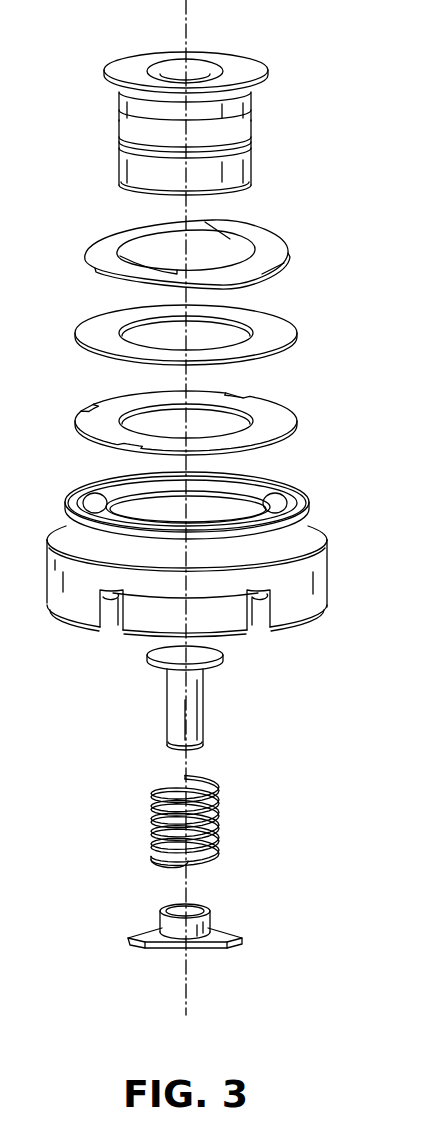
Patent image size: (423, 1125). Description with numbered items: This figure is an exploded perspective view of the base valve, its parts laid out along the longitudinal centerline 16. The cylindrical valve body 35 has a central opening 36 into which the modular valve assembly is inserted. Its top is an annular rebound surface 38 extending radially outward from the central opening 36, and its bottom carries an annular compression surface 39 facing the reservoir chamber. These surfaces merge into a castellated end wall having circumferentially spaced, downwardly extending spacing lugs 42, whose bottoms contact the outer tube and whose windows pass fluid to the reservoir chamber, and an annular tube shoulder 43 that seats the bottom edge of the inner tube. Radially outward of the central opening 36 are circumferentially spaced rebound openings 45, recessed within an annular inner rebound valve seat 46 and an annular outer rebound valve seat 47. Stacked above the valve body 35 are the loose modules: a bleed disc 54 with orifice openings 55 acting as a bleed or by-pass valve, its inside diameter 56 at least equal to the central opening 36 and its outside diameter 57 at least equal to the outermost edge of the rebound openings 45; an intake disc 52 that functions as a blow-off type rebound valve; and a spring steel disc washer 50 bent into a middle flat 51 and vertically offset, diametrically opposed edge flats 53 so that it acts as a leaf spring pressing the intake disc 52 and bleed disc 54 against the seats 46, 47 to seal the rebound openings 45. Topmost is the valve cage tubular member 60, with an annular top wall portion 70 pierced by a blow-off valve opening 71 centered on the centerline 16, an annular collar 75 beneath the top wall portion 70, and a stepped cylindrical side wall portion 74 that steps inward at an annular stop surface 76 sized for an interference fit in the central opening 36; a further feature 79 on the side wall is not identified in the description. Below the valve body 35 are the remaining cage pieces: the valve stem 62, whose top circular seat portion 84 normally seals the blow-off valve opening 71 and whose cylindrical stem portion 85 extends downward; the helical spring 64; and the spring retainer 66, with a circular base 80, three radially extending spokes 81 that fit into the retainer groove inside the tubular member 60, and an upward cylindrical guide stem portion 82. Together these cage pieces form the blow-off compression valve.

The longitudinal centerline 16 is at (186, 990).
The valve body 35 is at (201, 556).
The central opening 36 is at (215, 490).
The rebound surface 38 is at (280, 492).
The compression surface 39 is at (150, 498).
The spacing lugs 42 is at (110, 622).
The tube shoulder 43 is at (55, 530).
The rebound openings 45 is at (95, 505).
The inner rebound valve seat 46 is at (275, 500).
The outer rebound valve seat 47 is at (300, 500).
The disc washer 50 is at (223, 241).
The middle flat 51 is at (228, 226).
The intake disc 52 is at (290, 330).
The edge flats 53 is at (290, 268).
The bleed disc 54 is at (183, 411).
The orifice openings 55 is at (245, 392).
The inside diameter 56 is at (125, 400).
The outside diameter 57 is at (80, 418).
The valve cage tubular member 60 is at (188, 97).
The valve stem 62 is at (191, 698).
The helical spring 64 is at (222, 820).
The spring retainer 66 is at (179, 939).
The top wall portion 70 is at (245, 67).
The blow-off valve opening 71 is at (176, 64).
The side wall portion 74 is at (250, 165).
The annular collar 75 is at (258, 91).
The annular stop surface 76 is at (126, 120).
The cap groove 79 is at (125, 157).
The circular base 80 is at (196, 914).
The spokes 81 is at (240, 942).
The guide stem portion 82 is at (160, 916).
The top circular seat portion 84 is at (165, 672).
The cylindrical stem portion 85 is at (219, 700).